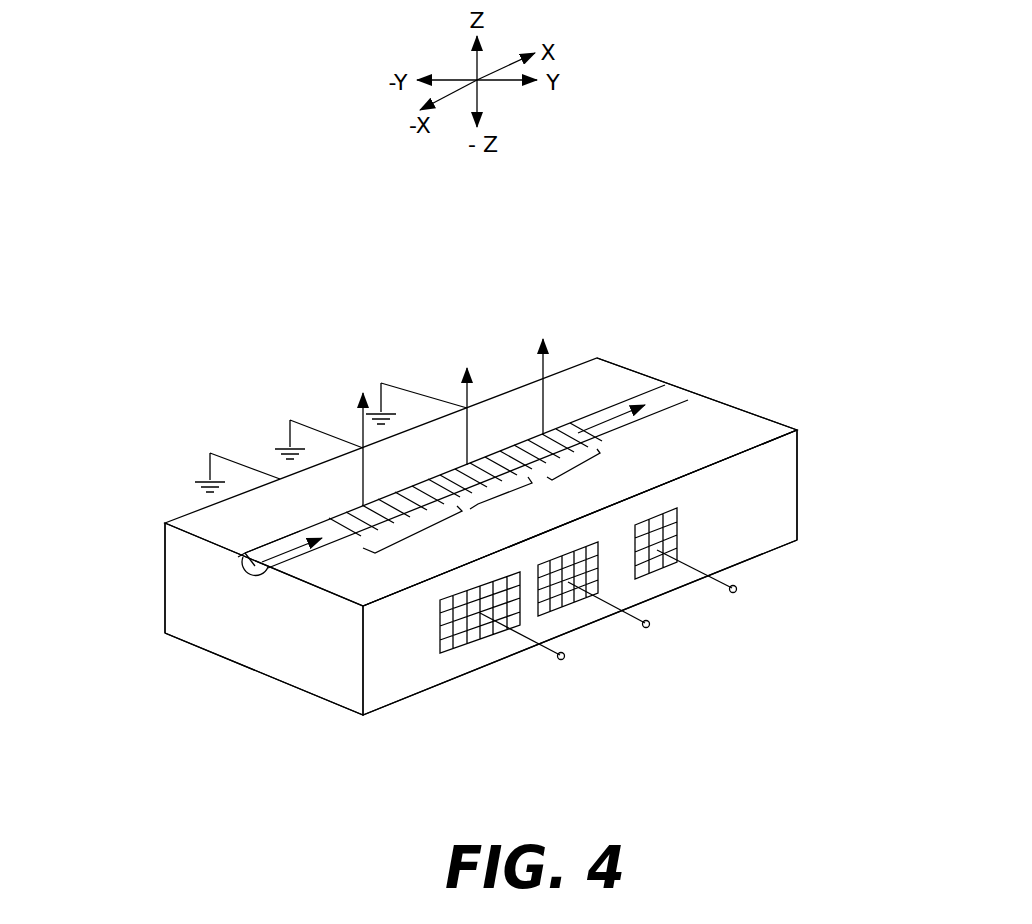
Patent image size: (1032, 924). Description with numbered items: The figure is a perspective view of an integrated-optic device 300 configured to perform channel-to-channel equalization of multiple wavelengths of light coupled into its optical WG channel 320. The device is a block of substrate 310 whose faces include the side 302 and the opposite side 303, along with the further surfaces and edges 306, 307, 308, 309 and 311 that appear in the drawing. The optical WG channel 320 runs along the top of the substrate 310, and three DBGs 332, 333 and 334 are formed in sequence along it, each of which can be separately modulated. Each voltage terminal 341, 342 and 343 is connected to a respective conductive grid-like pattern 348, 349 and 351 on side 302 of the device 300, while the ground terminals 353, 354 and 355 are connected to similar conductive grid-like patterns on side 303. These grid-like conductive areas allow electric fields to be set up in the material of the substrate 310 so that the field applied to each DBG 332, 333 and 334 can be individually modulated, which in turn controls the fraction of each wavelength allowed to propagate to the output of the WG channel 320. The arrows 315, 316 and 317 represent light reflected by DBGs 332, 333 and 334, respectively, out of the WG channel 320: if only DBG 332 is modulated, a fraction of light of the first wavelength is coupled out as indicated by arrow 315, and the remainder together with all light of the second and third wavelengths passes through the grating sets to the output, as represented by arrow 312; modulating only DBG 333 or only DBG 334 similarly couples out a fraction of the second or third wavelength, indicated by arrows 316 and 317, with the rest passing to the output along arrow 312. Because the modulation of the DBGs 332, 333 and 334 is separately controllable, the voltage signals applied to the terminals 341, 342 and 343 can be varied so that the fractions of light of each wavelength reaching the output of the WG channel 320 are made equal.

The integrated-optic device 300 is at (777, 210).
The side of the device 302 is at (385, 700).
The side of the device 303 is at (183, 602).
The bottom surface 306 is at (322, 677).
The right end face 307 is at (789, 463).
The waveguide input region 308 is at (258, 516).
The side face 309 is at (762, 544).
The substrate 310 is at (722, 432).
The input light 311 is at (259, 555).
The arrow 312 is at (616, 408).
The arrow 315 is at (357, 427).
The arrow 316 is at (467, 400).
The arrow 317 is at (545, 372).
The optical WG channel 320 is at (242, 571).
The DBG 332 is at (401, 522).
The DBG 333 is at (496, 489).
The DBG 334 is at (567, 463).
The voltage terminal 341 is at (545, 652).
The voltage terminal 342 is at (630, 622).
The voltage terminal 343 is at (715, 590).
The conductive grid-like pattern 348 is at (678, 533).
The conductive grid-like pattern 349 is at (617, 545).
The conductive grid-like pattern 351 is at (440, 613).
The ground terminal 353 is at (210, 453).
The ground terminal 354 is at (290, 420).
The ground terminal 355 is at (385, 386).